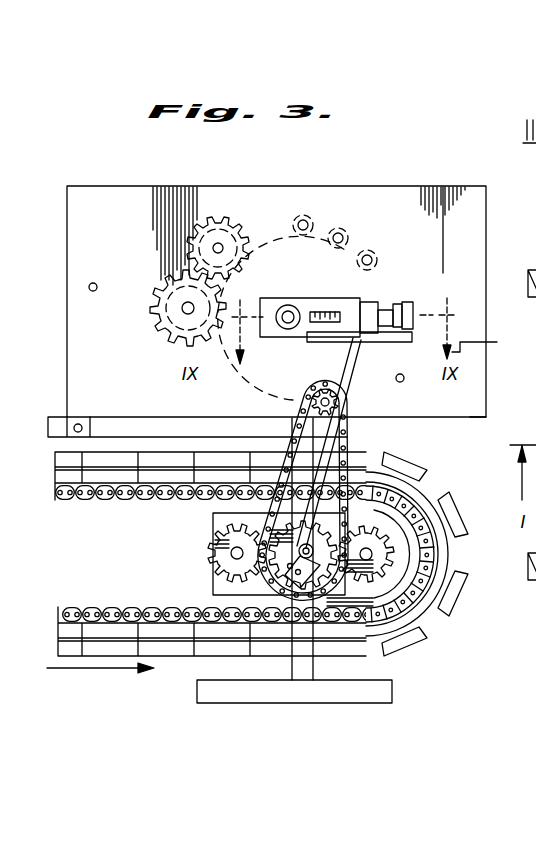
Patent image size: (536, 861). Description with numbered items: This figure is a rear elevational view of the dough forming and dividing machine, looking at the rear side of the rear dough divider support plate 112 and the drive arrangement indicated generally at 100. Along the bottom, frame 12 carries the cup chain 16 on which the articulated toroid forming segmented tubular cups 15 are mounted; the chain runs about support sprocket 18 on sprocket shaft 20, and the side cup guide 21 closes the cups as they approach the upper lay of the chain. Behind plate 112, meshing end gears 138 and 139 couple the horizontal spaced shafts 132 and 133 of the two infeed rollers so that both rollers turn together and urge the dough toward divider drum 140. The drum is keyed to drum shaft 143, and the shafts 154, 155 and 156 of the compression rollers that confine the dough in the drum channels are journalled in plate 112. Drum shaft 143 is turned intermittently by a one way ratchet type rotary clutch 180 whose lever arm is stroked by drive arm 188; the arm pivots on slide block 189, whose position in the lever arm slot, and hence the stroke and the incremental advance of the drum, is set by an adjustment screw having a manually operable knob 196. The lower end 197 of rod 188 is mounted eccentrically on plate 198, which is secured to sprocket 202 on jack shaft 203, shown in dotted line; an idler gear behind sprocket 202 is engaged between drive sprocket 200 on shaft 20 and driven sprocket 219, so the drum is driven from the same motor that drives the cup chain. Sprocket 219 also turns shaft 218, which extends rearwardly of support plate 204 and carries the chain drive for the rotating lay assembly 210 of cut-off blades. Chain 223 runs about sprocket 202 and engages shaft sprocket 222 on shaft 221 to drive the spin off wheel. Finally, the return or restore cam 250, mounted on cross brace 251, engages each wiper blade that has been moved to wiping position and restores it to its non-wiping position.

The labeling apparatus 100 is at (125, 172).
The rear dough divider support plate 112 is at (465, 200).
The end gear 139 is at (213, 217).
The shaft 133 is at (213, 247).
The end gear 138 is at (160, 327).
The shaft 132 is at (184, 306).
The divider drum 140 is at (182, 355).
The shaft 154 is at (300, 214).
The shaft 155 is at (340, 227).
The shaft 156 is at (374, 250).
The one way ratchet type rotary clutch 180 is at (323, 305).
The drum shaft 143 is at (288, 305).
The slide block 189 is at (372, 291).
The manually operable knob 196 is at (415, 297).
The cross brace 251 is at (497, 342).
The rotating lay assembly 210 is at (487, 376).
The return cam 250 is at (487, 416).
The shaft sprocket 222 is at (310, 407).
The shaft 221 is at (315, 392).
The drive arm 188 is at (350, 377).
The chain 223 is at (357, 409).
The cup chain 16 is at (92, 498).
The side cup guide 21 is at (97, 640).
The segmented tubular cups 15 is at (164, 667).
The frame 12 is at (377, 695).
The sprocket 202 is at (223, 578).
The shaft 218 is at (228, 552).
The driven sprocket 219 is at (205, 560).
The plate 198 is at (340, 566).
The jack shaft 203 is at (290, 565).
The support sprocket 18 is at (440, 561).
The lower end of rod 197 is at (352, 592).
The drive sprocket 200 is at (380, 520).
The sprocket shaft 20 is at (383, 540).
The support plate 204 is at (438, 625).